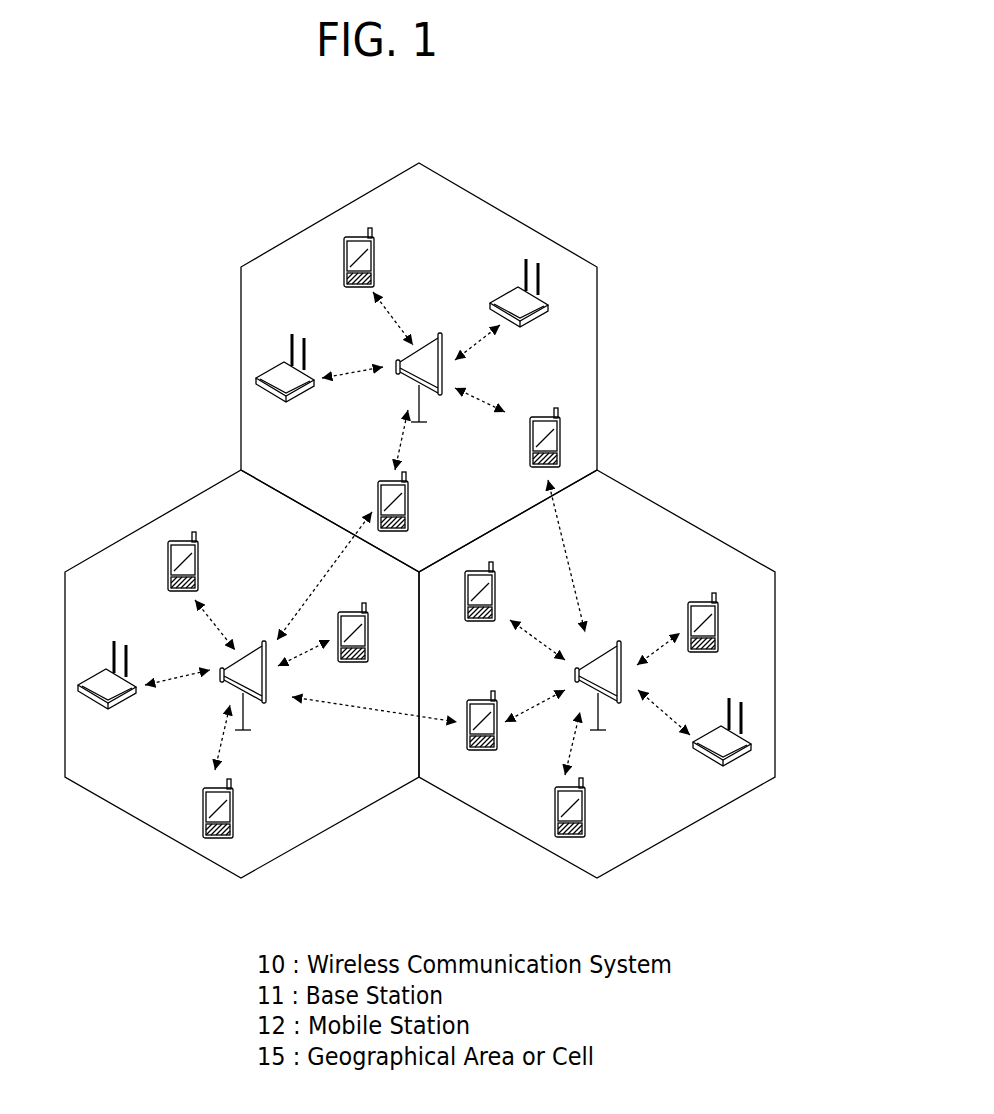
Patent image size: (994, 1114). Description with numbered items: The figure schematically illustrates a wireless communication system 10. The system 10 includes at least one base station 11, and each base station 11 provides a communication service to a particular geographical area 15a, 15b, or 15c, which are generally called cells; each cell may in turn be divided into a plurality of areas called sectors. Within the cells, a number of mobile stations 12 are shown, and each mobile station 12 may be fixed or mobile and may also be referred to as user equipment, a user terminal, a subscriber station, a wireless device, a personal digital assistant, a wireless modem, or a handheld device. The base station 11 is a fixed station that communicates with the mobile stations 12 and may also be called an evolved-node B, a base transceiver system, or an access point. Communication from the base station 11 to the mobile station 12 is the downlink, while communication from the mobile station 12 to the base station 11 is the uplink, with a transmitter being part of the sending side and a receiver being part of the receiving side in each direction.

The wireless communication system 10 is at (672, 270).
The base station 11 is at (435, 345).
The mobile station 12 is at (375, 260).
The geographical area 15a is at (598, 355).
The geographical area 15b is at (706, 532).
The geographical area 15c is at (131, 533).